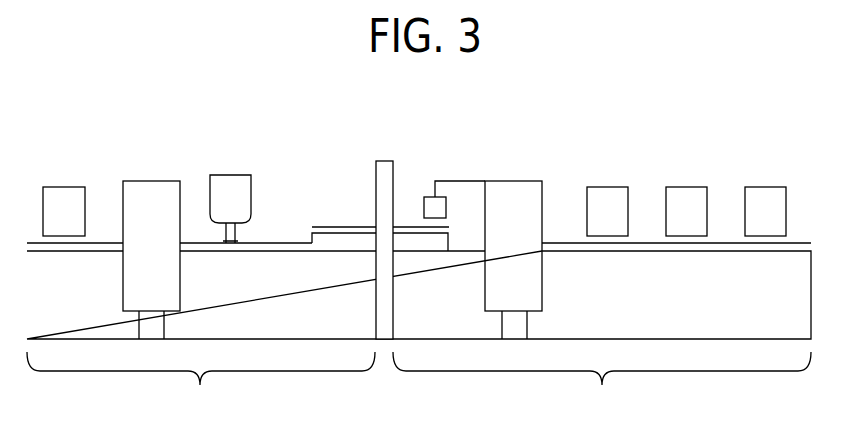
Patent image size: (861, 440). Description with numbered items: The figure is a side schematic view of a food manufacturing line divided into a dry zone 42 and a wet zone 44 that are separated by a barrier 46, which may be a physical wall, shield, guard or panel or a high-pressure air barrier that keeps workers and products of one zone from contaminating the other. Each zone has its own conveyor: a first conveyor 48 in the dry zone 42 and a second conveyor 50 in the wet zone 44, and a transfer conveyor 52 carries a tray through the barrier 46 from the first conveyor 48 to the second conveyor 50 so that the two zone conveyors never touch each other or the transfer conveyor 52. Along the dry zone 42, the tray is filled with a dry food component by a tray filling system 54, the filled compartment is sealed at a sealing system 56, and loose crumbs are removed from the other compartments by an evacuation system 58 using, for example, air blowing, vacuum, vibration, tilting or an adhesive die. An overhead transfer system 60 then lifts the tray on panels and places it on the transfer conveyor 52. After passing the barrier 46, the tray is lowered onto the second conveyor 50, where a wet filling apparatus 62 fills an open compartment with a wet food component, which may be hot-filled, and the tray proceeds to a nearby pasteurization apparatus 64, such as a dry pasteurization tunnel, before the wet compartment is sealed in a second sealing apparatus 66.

The dry zone 42 is at (602, 383).
The wet zone 44 is at (201, 383).
The barrier 46 is at (383, 161).
The first conveyor 48 is at (799, 243).
The second conveyor 50 is at (278, 243).
The transfer conveyor 52 is at (401, 226).
The tray filling system 54 is at (765, 187).
The sealing system 56 is at (685, 187).
The evacuation system 58 is at (607, 187).
The overhead transfer system 60 is at (513, 181).
The wet filling apparatus 62 is at (230, 175).
The pasteurization apparatus 64 is at (152, 181).
The second sealing apparatus 66 is at (65, 187).